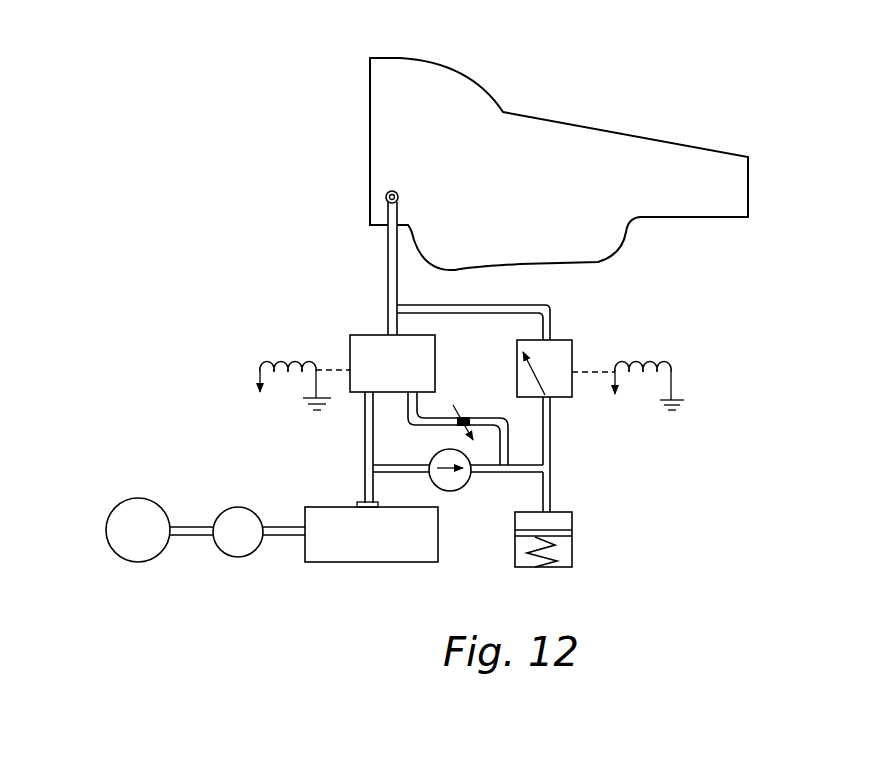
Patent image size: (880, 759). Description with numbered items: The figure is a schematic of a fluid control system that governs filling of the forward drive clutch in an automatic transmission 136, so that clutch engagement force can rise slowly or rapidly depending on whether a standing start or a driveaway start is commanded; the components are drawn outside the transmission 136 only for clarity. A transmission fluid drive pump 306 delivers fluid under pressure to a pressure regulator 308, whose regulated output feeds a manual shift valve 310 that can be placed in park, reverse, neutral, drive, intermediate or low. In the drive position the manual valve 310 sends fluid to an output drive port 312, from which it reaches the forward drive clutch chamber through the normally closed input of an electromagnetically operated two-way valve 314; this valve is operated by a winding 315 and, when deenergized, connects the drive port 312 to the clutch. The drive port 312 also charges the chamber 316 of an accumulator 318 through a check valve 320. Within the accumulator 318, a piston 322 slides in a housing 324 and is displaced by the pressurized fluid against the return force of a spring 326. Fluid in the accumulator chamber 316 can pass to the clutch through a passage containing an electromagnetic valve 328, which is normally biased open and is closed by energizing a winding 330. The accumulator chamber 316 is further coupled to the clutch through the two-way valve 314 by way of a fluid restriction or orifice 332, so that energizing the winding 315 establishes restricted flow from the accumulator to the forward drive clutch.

The automatic transmission 136 is at (600, 145).
The transmission fluid drive pump 306 is at (140, 507).
The pressure regulator 308 is at (227, 547).
The manual shift valve 310 is at (332, 555).
The output drive port 312 is at (360, 503).
The two-way valve 314 is at (362, 337).
The winding 315 is at (267, 358).
The accumulator chamber 316 is at (563, 522).
The accumulator 318 is at (569, 532).
The check valve 320 is at (450, 491).
The piston 322 is at (570, 532).
The housing 324 is at (518, 547).
The spring 326 is at (538, 565).
The electromagnetic valve 328 is at (558, 347).
The winding 330 is at (667, 362).
The fluid restriction or orifice 332 is at (462, 418).